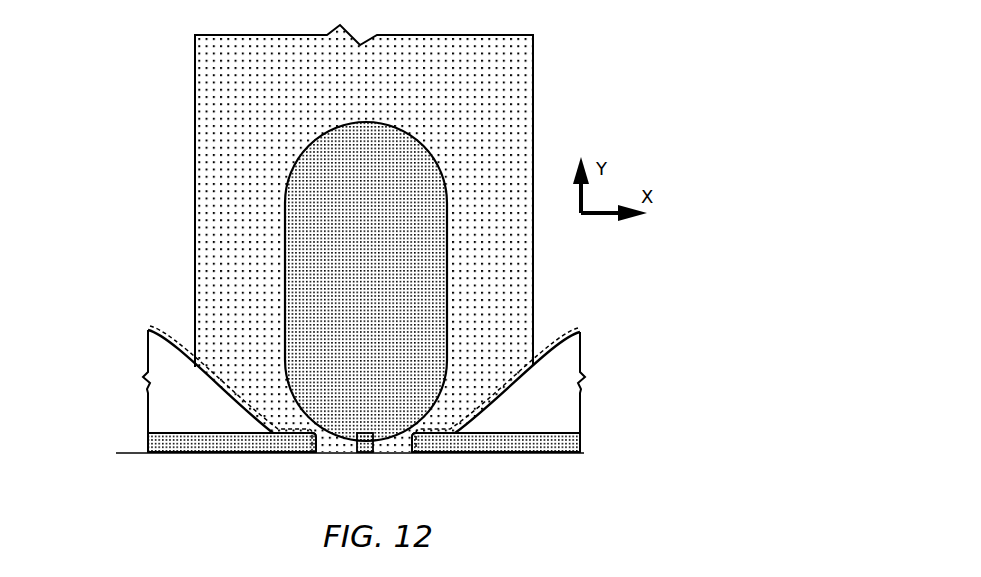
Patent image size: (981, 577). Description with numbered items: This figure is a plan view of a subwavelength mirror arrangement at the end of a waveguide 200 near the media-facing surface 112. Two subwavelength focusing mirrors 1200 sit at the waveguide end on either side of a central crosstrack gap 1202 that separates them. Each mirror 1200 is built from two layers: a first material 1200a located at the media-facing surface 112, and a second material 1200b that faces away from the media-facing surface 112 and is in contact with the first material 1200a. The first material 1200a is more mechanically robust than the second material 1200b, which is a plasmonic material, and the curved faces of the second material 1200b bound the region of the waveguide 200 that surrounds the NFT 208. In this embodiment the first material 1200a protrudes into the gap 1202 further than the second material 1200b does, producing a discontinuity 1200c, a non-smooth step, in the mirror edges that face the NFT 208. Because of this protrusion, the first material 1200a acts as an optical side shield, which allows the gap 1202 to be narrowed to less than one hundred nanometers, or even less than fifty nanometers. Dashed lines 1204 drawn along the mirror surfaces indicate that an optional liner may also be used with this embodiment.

The waveguide 200 is at (195, 103).
The NFT 208 is at (217, 239).
The dashed lines 1204 is at (166, 327).
The second material 1200b is at (156, 354).
The subwavelength focusing mirrors 1200 is at (148, 389).
The first material 1200a is at (147, 446).
The discontinuity 1200c is at (275, 453).
The crosstrack gap 1202 is at (340, 453).
The media-facing surface 112 is at (128, 453).